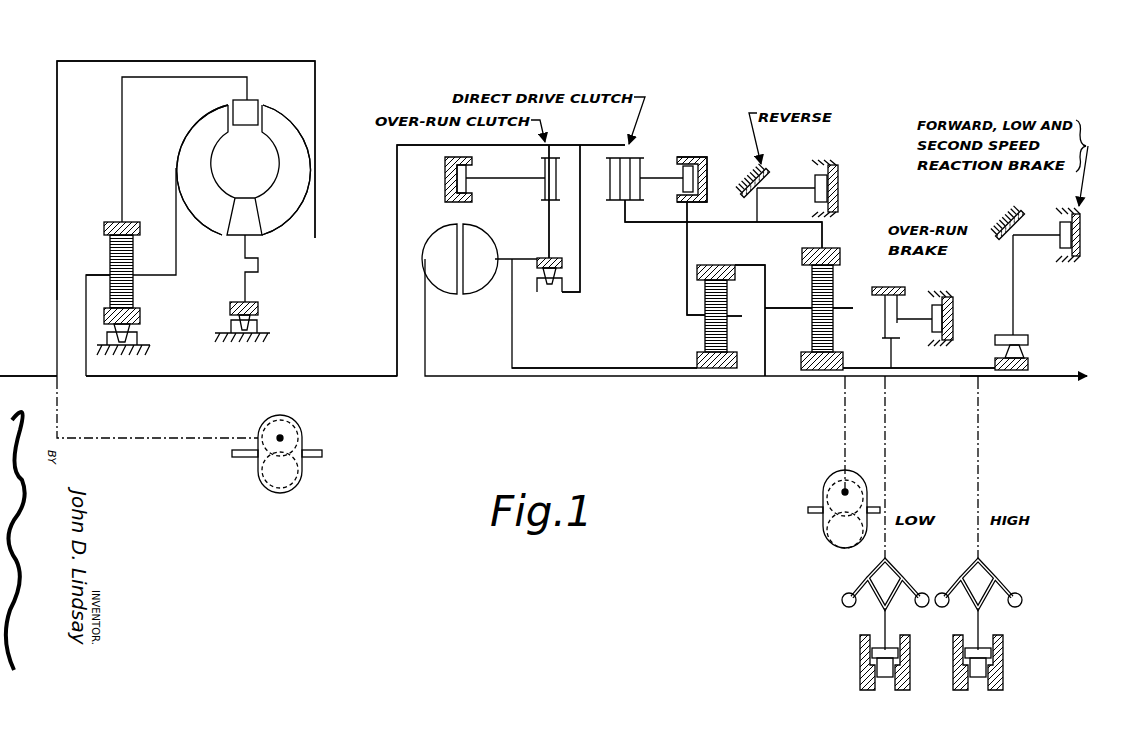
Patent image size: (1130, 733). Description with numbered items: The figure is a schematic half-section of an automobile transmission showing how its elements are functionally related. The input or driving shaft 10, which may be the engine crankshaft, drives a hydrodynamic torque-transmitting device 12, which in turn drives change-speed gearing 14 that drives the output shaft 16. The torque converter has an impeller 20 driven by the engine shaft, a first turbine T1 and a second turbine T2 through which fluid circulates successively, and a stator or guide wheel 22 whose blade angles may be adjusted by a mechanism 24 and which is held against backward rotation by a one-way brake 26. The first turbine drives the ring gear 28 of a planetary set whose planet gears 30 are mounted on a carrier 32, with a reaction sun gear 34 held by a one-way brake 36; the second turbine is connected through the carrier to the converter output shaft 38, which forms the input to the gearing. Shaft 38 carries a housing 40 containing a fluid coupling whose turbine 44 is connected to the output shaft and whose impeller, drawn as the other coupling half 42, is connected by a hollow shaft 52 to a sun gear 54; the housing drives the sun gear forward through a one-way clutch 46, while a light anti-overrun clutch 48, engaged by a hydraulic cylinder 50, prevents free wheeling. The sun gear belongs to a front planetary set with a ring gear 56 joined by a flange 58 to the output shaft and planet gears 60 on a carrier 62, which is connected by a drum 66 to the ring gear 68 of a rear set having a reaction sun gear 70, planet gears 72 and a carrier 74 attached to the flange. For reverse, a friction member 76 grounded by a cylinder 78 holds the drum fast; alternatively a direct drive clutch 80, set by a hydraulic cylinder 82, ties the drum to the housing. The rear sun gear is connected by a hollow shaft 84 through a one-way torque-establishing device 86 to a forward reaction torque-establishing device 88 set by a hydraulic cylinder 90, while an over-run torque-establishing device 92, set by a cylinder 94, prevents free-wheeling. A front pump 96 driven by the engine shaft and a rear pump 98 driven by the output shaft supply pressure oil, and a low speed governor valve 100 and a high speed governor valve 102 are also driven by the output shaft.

The input or driving shaft 10 is at (14, 372).
The hydrodynamic torque-transmitting device 12 is at (251, 57).
The first turbine T1 is at (247, 108).
The second turbine T2 is at (192, 163).
The impeller 20 is at (300, 170).
The reaction element, stator or guide wheel 22 is at (250, 230).
The blade angle adjusting mechanism 24 is at (258, 265).
The one-way brake 26 is at (250, 320).
The input or ring gear 28 is at (112, 222).
The planet gears 30 is at (110, 250).
The carrier 32 is at (150, 275).
The reaction sun gear 34 is at (140, 318).
The one-way brake 36 is at (132, 335).
The torque converter output shaft 38 is at (340, 375).
The housing 40 is at (397, 238).
The gear half 42 is at (478, 283).
The turbine 44 is at (448, 286).
The one-way clutch 46 is at (557, 286).
The anti-overrun clutch 48 is at (545, 178).
The hydraulic cylinder 50 is at (445, 188).
The hollow shaft 52 is at (622, 368).
The sun gear 54 is at (697, 362).
The ring gear 56 is at (725, 265).
The flange 58 is at (765, 295).
The planet gears 60 is at (727, 310).
The carrier 62 is at (685, 300).
The drum 66 is at (733, 222).
The ring gear 68 is at (835, 248).
The reaction sun gear 70 is at (840, 360).
The planet gears 72 is at (833, 295).
The carrier 74 is at (800, 310).
The friction member 76 is at (757, 180).
The cylinder 78 is at (828, 186).
The direct drive clutch 80 is at (640, 160).
The hydraulic cylinder 82 is at (690, 168).
The hollow shaft 84 is at (955, 368).
The one-way torque-establishing device 86 is at (1028, 360).
The forward reaction torque-establishing device 88 is at (1013, 225).
The hydraulic cylinder 90 is at (1080, 237).
The over-run torque-establishing device 92 is at (897, 300).
The hydraulic cylinder 94 is at (953, 318).
The front pump 96 is at (295, 440).
The rear pump 98 is at (835, 478).
The low speed governor valve 100 is at (890, 563).
The high speed governor valve 102 is at (985, 570).
The change-speed gearing 14 is at (684, 136).
The output shaft 16 is at (1050, 380).